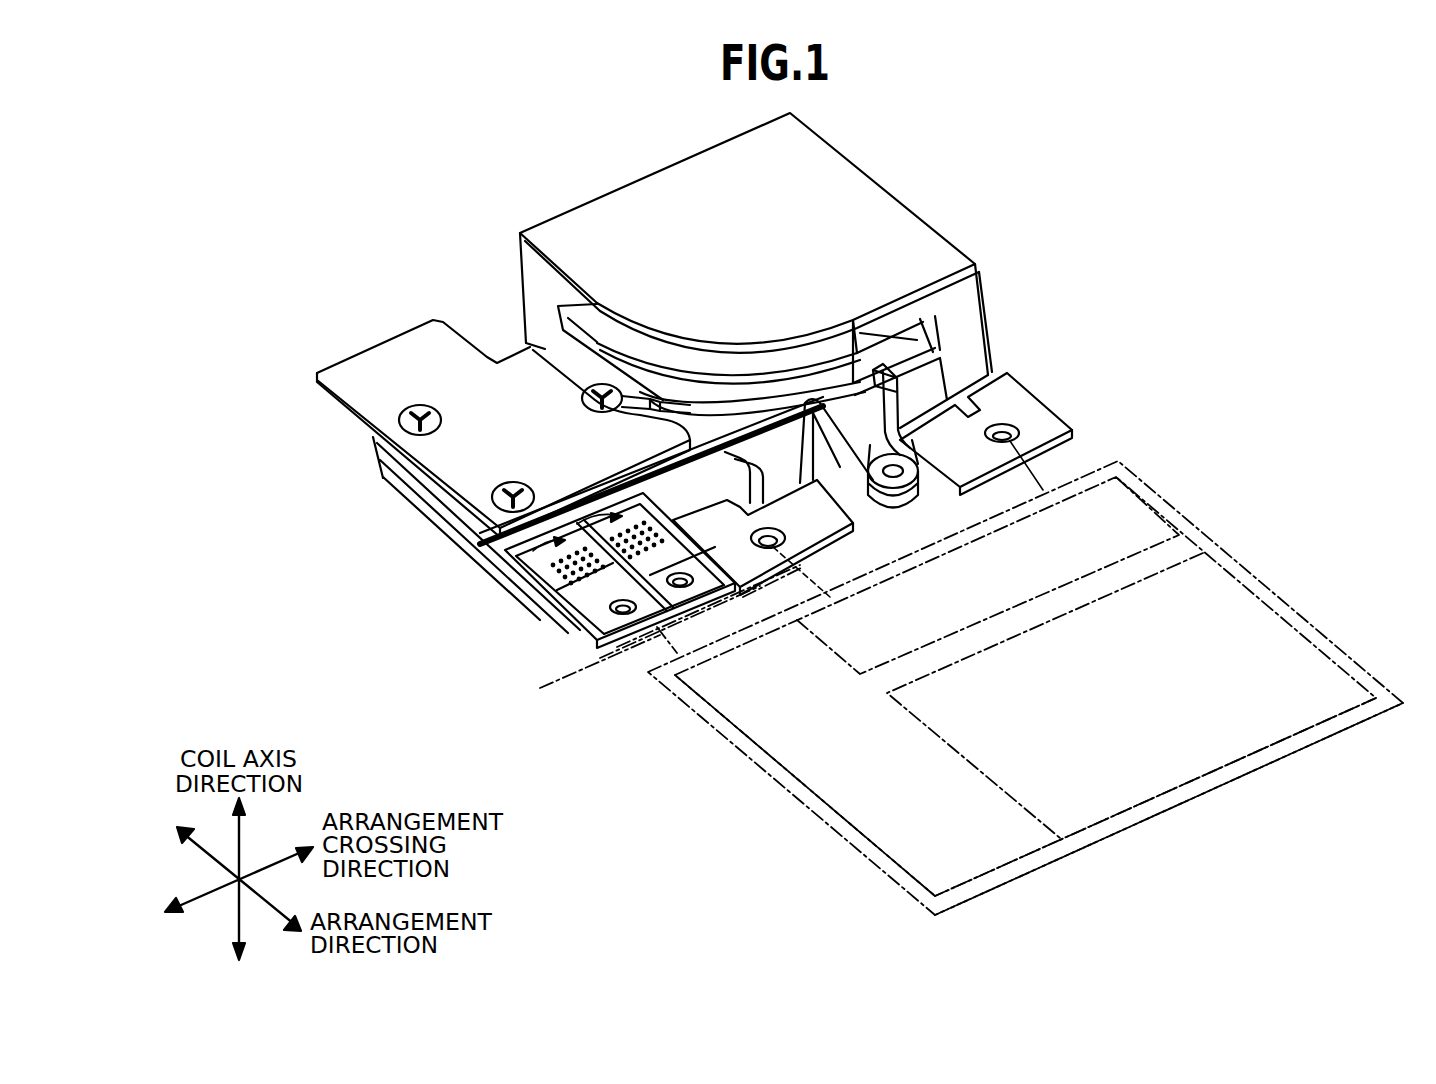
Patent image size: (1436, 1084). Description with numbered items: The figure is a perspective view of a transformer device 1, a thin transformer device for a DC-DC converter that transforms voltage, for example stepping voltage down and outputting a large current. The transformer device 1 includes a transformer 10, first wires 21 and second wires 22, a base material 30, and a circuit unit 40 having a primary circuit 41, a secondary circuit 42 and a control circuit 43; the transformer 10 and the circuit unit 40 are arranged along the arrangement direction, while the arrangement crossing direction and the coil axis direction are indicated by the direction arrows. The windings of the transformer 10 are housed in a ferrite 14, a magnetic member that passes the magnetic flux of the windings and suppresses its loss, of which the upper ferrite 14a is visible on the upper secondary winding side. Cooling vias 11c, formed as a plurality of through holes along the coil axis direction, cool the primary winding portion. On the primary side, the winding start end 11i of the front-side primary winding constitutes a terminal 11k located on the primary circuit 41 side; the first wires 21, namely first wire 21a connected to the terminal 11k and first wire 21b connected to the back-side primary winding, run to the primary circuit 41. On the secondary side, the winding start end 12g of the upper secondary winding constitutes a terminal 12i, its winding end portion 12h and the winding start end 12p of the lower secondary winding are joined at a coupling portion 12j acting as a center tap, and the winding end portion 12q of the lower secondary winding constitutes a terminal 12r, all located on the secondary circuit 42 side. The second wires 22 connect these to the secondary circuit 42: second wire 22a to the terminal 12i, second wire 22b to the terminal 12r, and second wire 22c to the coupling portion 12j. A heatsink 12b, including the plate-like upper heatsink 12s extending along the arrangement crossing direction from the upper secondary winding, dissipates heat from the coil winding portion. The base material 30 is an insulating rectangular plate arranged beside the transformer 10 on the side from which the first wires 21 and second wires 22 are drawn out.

The transformer device 1 is at (1176, 141).
The transformer 10 is at (640, 166).
The cooling vias 11c is at (548, 560).
The winding start end 11i is at (584, 581).
The terminal 11k is at (585, 618).
The heatsink 12b is at (432, 365).
The upper heatsink 12s is at (503, 436).
The winding start end 12g is at (1055, 396).
The terminal 12i is at (1030, 417).
The winding end portion 12h is at (892, 460).
The coupling portion 12j is at (1010, 505).
The winding start end 12p is at (1033, 497).
The winding end portion 12q is at (916, 364).
The terminal 12r is at (895, 372).
The ferrite 14 is at (756, 270).
The upper ferrite 14a is at (847, 205).
The first wires 21 is at (896, 686).
The first wire 21a is at (693, 633).
The first wire 21b is at (693, 627).
The second wires 22 is at (860, 585).
The second wire 22a is at (1030, 497).
The second wire 22b is at (693, 617).
The second wire 22c is at (1050, 490).
The base material 30 is at (720, 735).
The circuit unit 40 is at (752, 835).
The primary circuit 41 is at (870, 815).
The secondary circuit 42 is at (850, 637).
The control circuit 43 is at (990, 745).